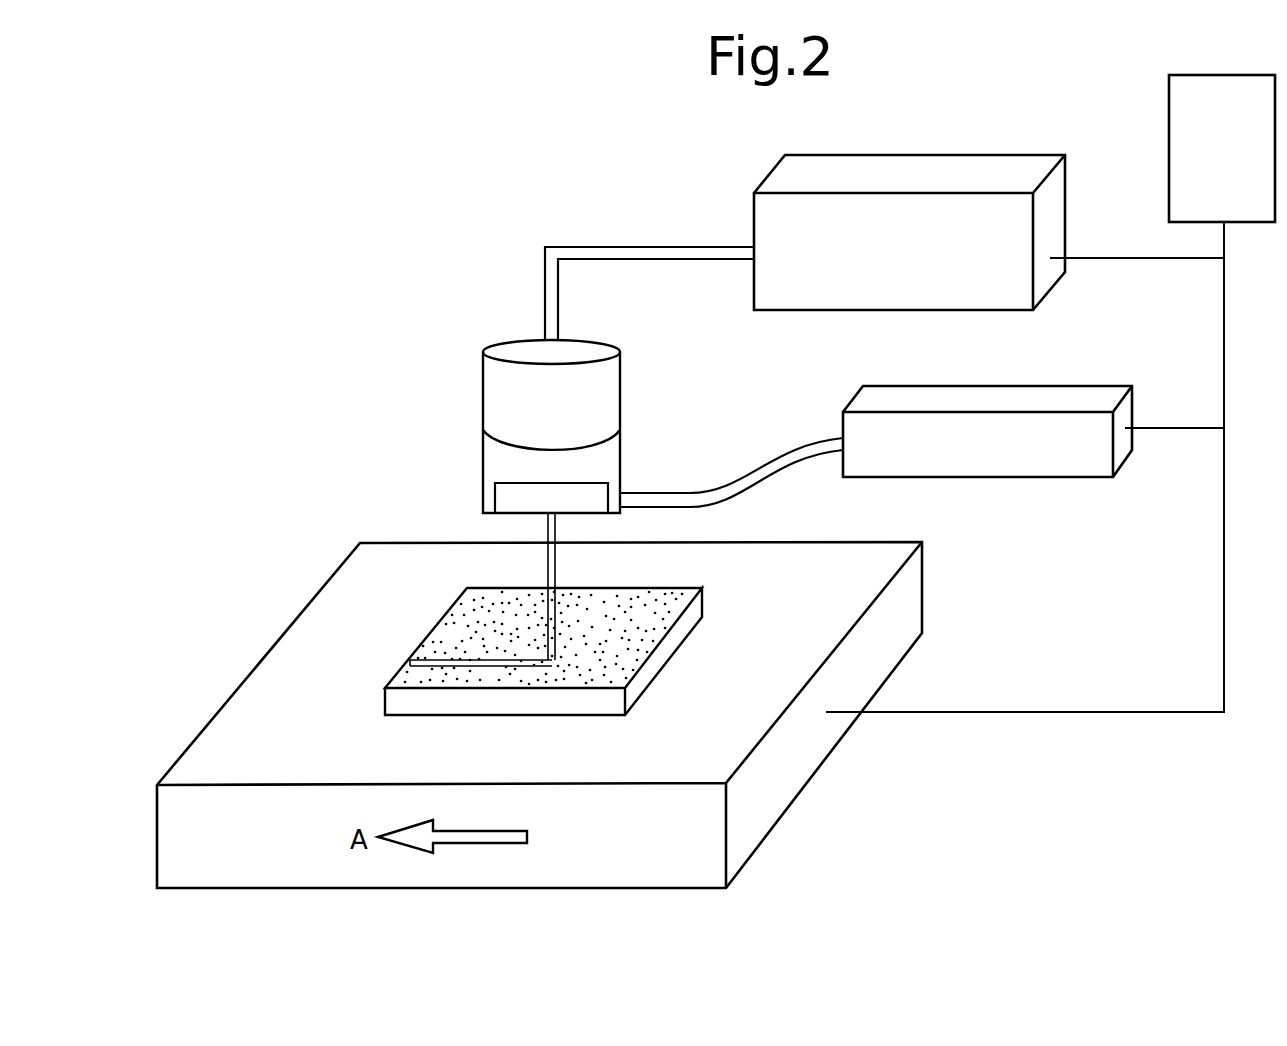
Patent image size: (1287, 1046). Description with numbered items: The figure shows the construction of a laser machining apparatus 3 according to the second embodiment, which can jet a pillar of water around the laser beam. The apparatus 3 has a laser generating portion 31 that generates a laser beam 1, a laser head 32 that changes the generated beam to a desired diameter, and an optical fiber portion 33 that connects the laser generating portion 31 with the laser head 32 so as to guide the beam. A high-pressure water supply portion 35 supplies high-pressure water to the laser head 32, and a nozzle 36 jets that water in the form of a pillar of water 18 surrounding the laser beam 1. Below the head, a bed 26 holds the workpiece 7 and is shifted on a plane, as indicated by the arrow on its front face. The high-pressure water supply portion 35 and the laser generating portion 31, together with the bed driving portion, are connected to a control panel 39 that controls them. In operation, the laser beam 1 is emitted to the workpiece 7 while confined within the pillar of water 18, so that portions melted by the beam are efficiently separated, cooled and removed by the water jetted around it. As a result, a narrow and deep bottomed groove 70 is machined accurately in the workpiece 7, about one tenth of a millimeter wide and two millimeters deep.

The laser beam 1 is at (550, 620).
The laser machining apparatus 3 is at (700, 162).
The workpiece 7 is at (658, 600).
The pillar of water 18 is at (548, 568).
The bed 26 is at (800, 758).
The laser generating portion 31 is at (920, 165).
The laser head 32 is at (497, 400).
The optical fiber portion 33 is at (600, 250).
The high-pressure water supply portion 35 is at (1077, 392).
The nozzle 36 is at (500, 500).
The control panel 39 is at (1175, 112).
The bottomed groove 70 is at (415, 663).